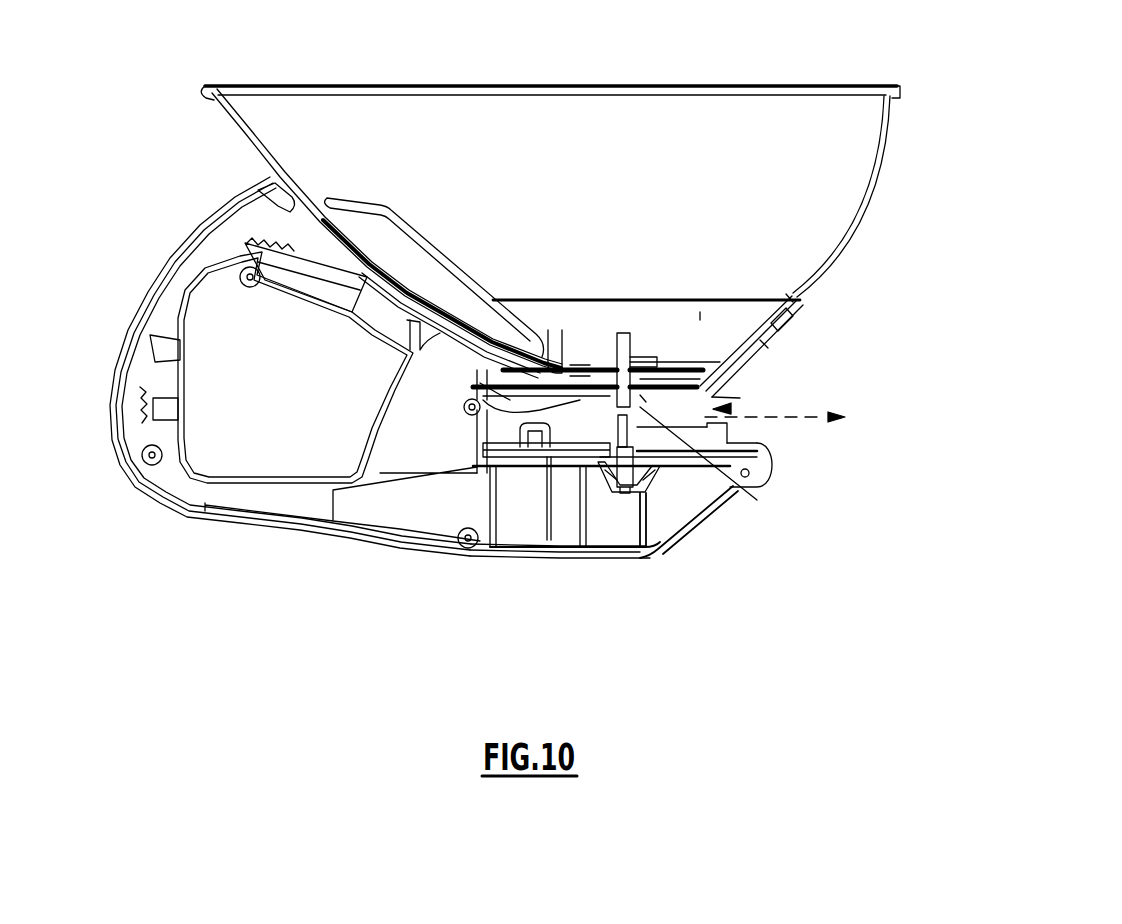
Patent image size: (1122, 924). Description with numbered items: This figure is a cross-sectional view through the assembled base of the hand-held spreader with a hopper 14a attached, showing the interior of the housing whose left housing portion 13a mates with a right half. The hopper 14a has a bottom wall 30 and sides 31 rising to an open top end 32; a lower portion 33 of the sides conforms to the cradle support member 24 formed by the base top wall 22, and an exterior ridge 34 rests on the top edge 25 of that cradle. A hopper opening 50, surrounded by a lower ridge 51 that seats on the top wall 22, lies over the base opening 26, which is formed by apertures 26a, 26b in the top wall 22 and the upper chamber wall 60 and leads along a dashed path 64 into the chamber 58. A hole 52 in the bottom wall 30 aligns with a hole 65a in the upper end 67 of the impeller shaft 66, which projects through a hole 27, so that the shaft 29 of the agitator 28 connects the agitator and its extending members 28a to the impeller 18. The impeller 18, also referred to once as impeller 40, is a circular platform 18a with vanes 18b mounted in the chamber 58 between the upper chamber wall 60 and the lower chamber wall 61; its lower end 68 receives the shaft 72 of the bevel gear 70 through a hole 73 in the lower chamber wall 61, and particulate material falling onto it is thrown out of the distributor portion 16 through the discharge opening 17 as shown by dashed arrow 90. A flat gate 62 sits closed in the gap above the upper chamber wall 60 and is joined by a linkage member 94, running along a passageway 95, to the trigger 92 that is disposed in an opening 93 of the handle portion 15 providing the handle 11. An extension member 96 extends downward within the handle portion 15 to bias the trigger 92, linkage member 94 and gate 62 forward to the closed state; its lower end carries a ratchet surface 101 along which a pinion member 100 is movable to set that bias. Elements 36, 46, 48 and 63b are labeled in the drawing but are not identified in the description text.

The handle 11 is at (120, 365).
The left housing portion 13a is at (638, 560).
The hopper 14a is at (873, 182).
The handle portion 15 is at (203, 220).
The distributor portion 16 is at (712, 523).
The discharge opening 17 is at (731, 408).
The impeller 18 is at (747, 441).
The circular platform 18a is at (767, 462).
The vanes 18b is at (492, 488).
The top wall 22 is at (703, 397).
The cradle support member 24 is at (793, 330).
The top edge of cradle 25 is at (805, 316).
The opening 26 is at (532, 440).
The aperture of top wall 26a is at (556, 366).
The aperture of upper chamber wall 26b is at (463, 407).
The hole 27 is at (660, 386).
The agitator 28 is at (624, 333).
The extending members 28a is at (647, 372).
The agitator shaft 29 is at (668, 386).
The bottom wall 30 is at (703, 366).
The sides 31 is at (838, 255).
The open top end 32 is at (835, 88).
The lower portion 33 is at (703, 318).
The ridge 34 is at (790, 296).
The chute 36 is at (447, 287).
The impeller 40 is at (430, 265).
The guide rail 46 is at (768, 355).
The guide edge 48 is at (742, 397).
The hopper opening 50 is at (568, 365).
The lower ridge 51 is at (580, 370).
The hole 52 is at (640, 366).
The chamber 58 is at (477, 423).
The upper chamber wall 60 is at (478, 383).
The lower chamber wall 61 is at (740, 490).
The gate 62 is at (547, 350).
The sloped wall 63b is at (700, 530).
The path 64 is at (575, 447).
The hole 65a is at (713, 540).
The impeller shaft 66 is at (580, 450).
The upper end 67 is at (643, 400).
The lower end 68 is at (650, 497).
The gear 70 is at (637, 492).
The gear shaft 72 is at (625, 490).
The hole 73 is at (612, 470).
The discharge arrow 90 is at (803, 420).
The trigger 92 is at (300, 307).
The opening 93 is at (363, 283).
The linkage member 94 is at (410, 345).
The passageway 95 is at (407, 327).
The extension member 96 is at (210, 265).
The pinion member 100 is at (120, 378).
The ratchet surface 101 is at (140, 408).